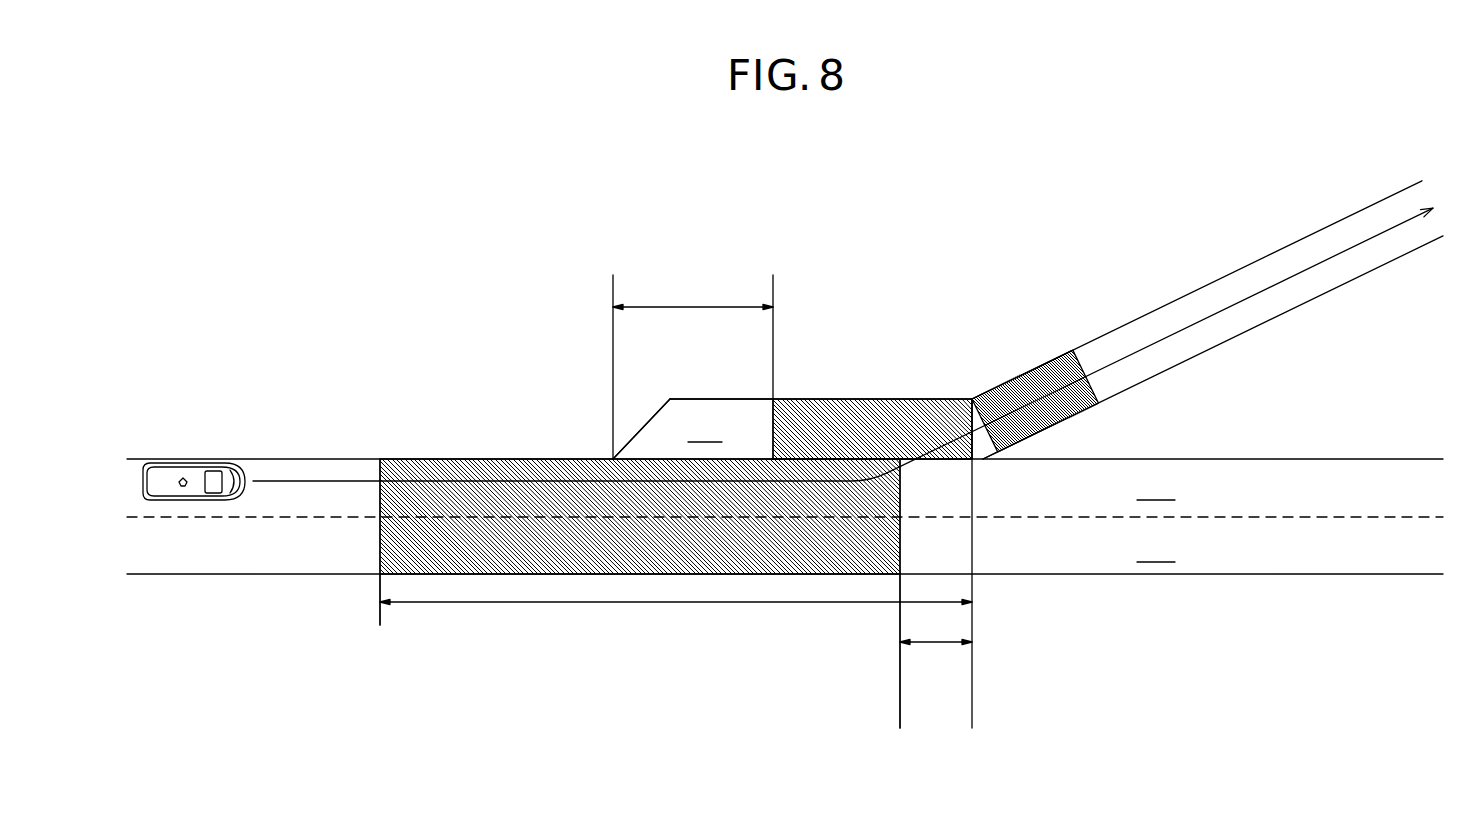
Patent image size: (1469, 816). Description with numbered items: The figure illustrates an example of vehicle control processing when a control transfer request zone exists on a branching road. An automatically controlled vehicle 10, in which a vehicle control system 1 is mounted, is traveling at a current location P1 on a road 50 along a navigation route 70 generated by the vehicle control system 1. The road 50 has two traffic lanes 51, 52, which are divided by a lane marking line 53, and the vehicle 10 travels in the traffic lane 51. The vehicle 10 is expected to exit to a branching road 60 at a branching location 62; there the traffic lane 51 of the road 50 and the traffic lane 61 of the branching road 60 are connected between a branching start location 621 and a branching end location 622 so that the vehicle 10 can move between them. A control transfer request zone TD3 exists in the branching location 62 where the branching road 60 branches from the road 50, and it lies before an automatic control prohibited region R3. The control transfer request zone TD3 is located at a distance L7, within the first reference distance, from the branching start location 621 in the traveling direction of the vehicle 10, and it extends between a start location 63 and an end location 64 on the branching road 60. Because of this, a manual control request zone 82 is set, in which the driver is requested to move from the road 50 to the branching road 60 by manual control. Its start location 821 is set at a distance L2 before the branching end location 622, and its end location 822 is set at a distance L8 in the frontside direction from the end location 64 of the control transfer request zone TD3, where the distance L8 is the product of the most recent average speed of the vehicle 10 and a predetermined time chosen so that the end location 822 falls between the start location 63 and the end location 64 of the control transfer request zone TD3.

The automatically controlled vehicle 10 is at (165, 465).
The current location P1 is at (183, 476).
The vehicle control system 1 is at (213, 462).
The navigation route 70 is at (297, 481).
The road 50 is at (1228, 458).
The traffic lane 51 is at (1156, 487).
The traffic lane 52 is at (1156, 549).
The lane marking line 53 is at (1228, 515).
The branching road 60 is at (1122, 327).
The traffic lane 61 is at (693, 429).
The branching location 62 is at (743, 399).
The branching start location 621 is at (612, 459).
The branching end location 622 is at (982, 462).
The start location 63 is at (773, 399).
The end location 64 is at (970, 399).
The control transfer request zone TD3 is at (840, 430).
The automatic control prohibited region R3 is at (1047, 360).
The manual control request zone 82 is at (387, 540).
The start location 821 is at (374, 575).
The end location 822 is at (894, 625).
The distance L2 is at (676, 651).
The distance L7 is at (693, 365).
The distance L8 is at (938, 675).